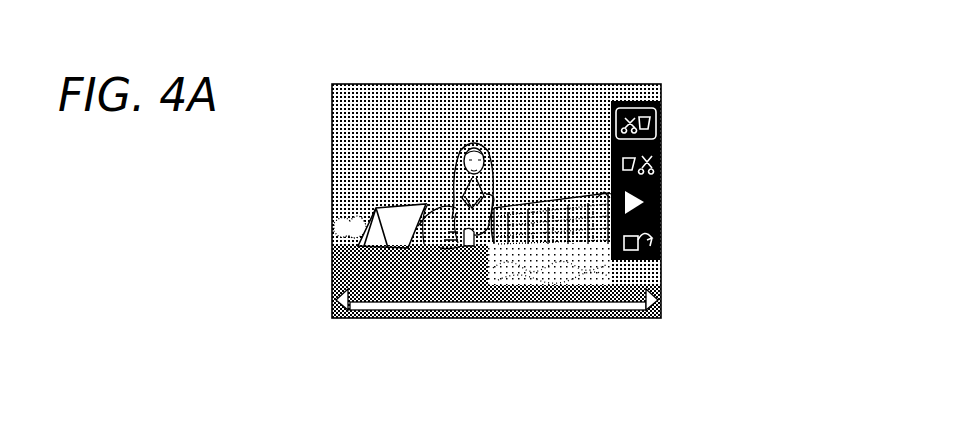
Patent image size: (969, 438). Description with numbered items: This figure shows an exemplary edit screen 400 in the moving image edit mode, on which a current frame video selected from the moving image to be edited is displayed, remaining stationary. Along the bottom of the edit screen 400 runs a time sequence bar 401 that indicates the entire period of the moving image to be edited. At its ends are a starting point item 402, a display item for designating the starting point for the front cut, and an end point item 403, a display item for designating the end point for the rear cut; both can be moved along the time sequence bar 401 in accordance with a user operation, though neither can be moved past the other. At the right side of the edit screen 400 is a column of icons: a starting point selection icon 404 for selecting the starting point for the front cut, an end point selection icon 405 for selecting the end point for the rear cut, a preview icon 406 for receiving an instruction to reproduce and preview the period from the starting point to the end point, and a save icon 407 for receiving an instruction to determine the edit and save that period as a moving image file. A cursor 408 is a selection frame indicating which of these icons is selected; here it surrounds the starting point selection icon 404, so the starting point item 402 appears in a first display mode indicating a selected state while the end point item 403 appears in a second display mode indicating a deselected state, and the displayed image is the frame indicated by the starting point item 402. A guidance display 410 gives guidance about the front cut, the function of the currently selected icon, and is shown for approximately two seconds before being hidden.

The edit screen 400 is at (323, 153).
The time sequence bar 401 is at (446, 302).
The starting point item 402 is at (325, 307).
The end point item 403 is at (651, 303).
The starting point selection icon 404 is at (646, 115).
The end point selection icon 405 is at (646, 153).
The preview icon 406 is at (646, 192).
The save icon 407 is at (646, 234).
The cursor 408 is at (637, 97).
The guidance display 410 is at (323, 261).